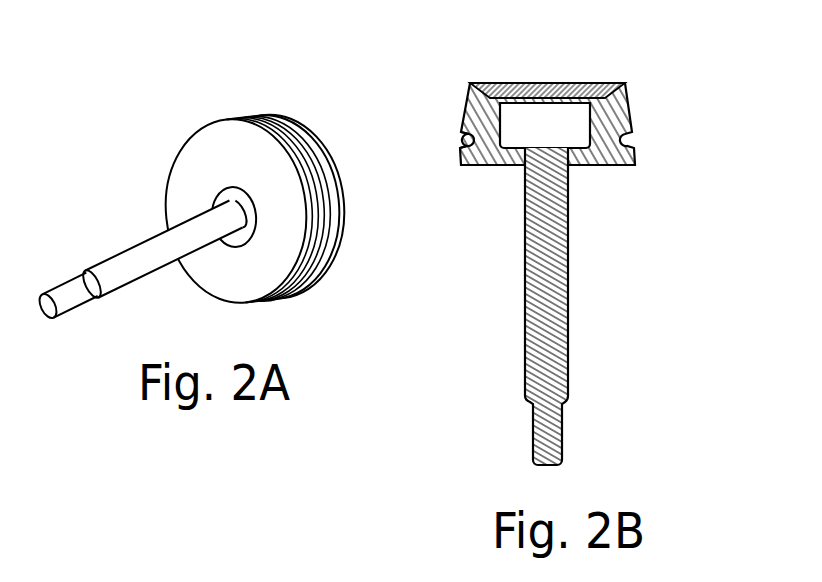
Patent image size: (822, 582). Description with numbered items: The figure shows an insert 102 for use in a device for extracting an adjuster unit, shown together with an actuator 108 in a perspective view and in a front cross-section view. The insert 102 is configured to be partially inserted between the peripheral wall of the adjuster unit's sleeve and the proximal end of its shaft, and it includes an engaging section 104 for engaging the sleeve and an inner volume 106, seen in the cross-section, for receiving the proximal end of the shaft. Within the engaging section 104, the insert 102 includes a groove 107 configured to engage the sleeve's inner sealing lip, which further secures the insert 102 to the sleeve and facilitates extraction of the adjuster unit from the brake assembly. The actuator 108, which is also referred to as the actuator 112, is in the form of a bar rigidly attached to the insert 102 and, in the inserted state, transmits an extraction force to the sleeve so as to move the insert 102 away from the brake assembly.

In FIG. 2A, the insert 102 is at (250, 119).
In FIG. 2B, the insert 102 is at (638, 163).
In FIG. 2A, the engaging section 104 is at (345, 201).
In FIG. 2B, the engaging section 104 is at (623, 82).
In FIG. 2B, the inner volume 106 is at (575, 137).
In FIG. 2A, the groove 107 is at (298, 290).
In FIG. 2B, the groove 107 is at (463, 142).
In FIG. 2A, the actuator 108 is at (114, 258).
In FIG. 2B, the actuator 108 is at (569, 322).
In FIG. 2B, the actuator 112 is at (649, 306).